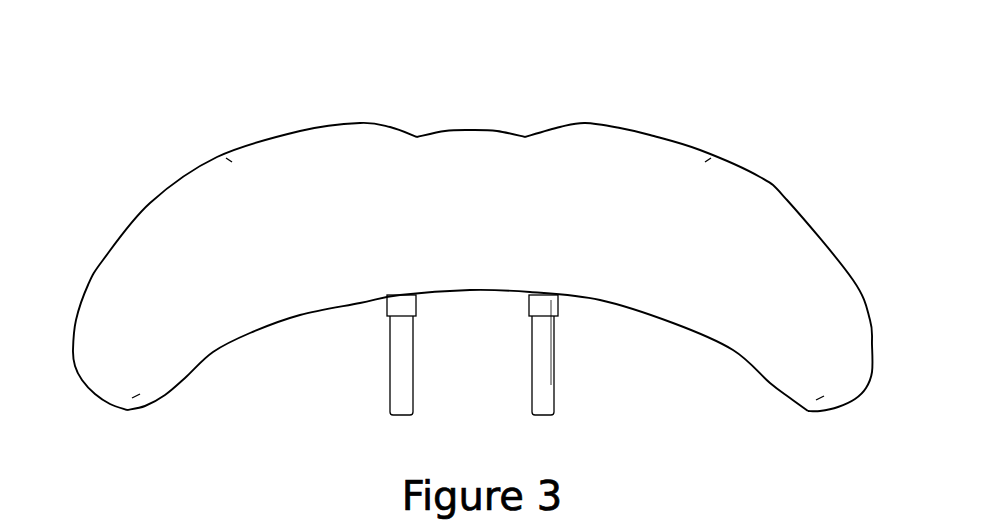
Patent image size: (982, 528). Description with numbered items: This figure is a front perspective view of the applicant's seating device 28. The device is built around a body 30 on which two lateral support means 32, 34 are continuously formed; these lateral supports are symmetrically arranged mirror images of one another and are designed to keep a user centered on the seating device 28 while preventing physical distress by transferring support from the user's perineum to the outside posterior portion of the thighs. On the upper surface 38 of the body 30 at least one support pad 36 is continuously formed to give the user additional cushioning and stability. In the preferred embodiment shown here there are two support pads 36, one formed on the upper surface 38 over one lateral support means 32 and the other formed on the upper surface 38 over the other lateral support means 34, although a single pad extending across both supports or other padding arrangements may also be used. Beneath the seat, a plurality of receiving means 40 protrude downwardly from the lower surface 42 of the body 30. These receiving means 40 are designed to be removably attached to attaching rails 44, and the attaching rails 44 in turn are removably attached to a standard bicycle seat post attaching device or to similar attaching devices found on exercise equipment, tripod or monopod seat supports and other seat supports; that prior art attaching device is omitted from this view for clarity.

The seating device 28 is at (460, 215).
The body 30 is at (482, 143).
The lateral support means 32 is at (134, 398).
The lateral support means 34 is at (816, 400).
The support pad 36 is at (232, 162).
The upper surface 38 is at (489, 257).
The receiving means 40 is at (390, 303).
The lower surface 42 is at (471, 292).
The attaching rails 44 is at (398, 410).